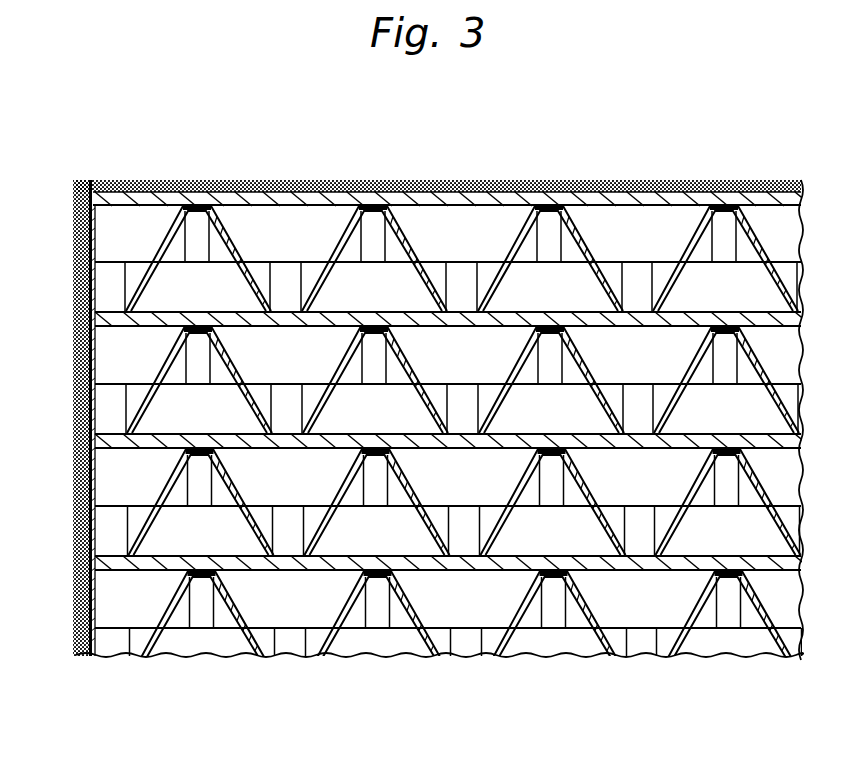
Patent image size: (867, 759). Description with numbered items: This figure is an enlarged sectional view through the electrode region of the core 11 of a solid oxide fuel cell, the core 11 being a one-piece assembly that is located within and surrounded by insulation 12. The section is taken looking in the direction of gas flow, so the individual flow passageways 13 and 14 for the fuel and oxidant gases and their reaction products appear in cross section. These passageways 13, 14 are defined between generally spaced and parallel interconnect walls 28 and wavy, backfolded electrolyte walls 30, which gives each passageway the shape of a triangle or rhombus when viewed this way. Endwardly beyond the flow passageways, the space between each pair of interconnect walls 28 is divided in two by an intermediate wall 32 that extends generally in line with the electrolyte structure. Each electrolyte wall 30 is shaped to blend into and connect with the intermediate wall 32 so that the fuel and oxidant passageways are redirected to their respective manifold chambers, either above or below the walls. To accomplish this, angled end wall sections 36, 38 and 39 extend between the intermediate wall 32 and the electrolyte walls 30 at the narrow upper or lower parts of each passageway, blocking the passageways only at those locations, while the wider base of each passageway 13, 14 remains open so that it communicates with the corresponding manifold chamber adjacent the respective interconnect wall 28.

The core 11 is at (313, 670).
The insulation 12 is at (492, 192).
The passageways 13 is at (306, 217).
The passageways 14 is at (384, 280).
The interconnect walls 28 is at (152, 190).
The electrolyte walls 30 is at (571, 222).
The intermediate wall 32 is at (172, 264).
The angled end wall section 36 is at (200, 225).
The angled end wall section 38 is at (478, 393).
The angled end wall section 39 is at (492, 638).